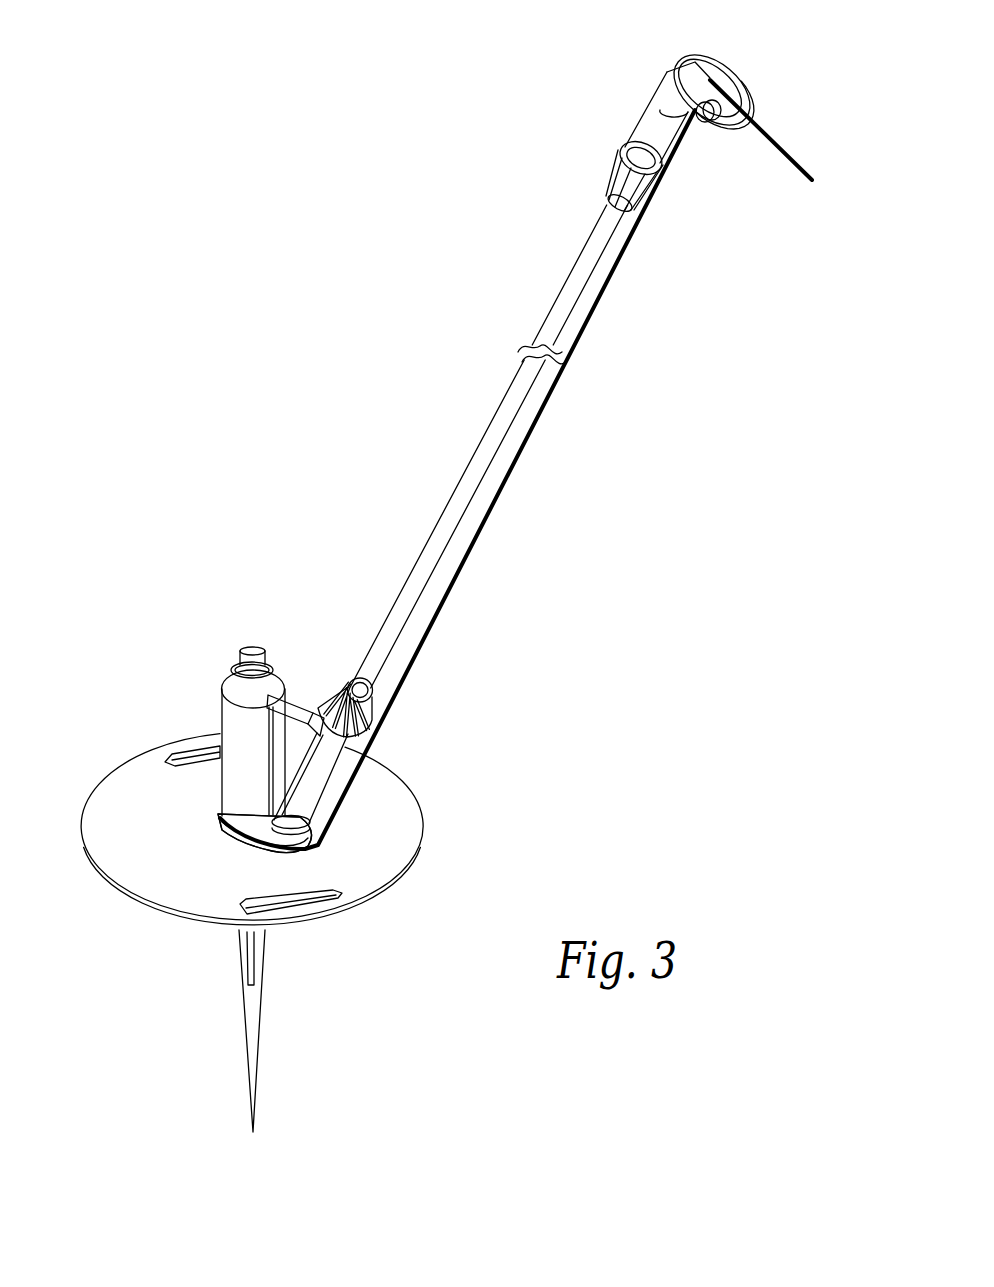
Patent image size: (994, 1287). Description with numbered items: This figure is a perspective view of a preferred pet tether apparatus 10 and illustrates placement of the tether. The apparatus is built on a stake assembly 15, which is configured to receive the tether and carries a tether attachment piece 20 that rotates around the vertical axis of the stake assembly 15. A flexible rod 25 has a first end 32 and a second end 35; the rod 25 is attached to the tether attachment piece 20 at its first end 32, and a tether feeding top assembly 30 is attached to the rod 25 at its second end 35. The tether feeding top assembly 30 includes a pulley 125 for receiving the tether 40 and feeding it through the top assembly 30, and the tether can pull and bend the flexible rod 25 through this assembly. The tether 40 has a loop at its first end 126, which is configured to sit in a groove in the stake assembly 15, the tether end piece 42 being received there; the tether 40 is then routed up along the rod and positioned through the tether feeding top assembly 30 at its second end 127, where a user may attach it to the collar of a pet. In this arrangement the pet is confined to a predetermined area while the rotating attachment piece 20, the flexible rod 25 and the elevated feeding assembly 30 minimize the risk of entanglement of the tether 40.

The pet tether apparatus 10 is at (234, 364).
The stake assembly 15 is at (91, 666).
The tether attachment piece 20 is at (233, 670).
The flexible rod 25 is at (452, 490).
The tether feeding top assembly 30 is at (662, 90).
The first end 32 is at (352, 676).
The second end 35 is at (608, 203).
The tether 40 is at (762, 145).
The tether end piece 42 is at (216, 810).
The pulley 125 is at (750, 82).
The first end 126 is at (209, 825).
The second end 127 is at (746, 90).